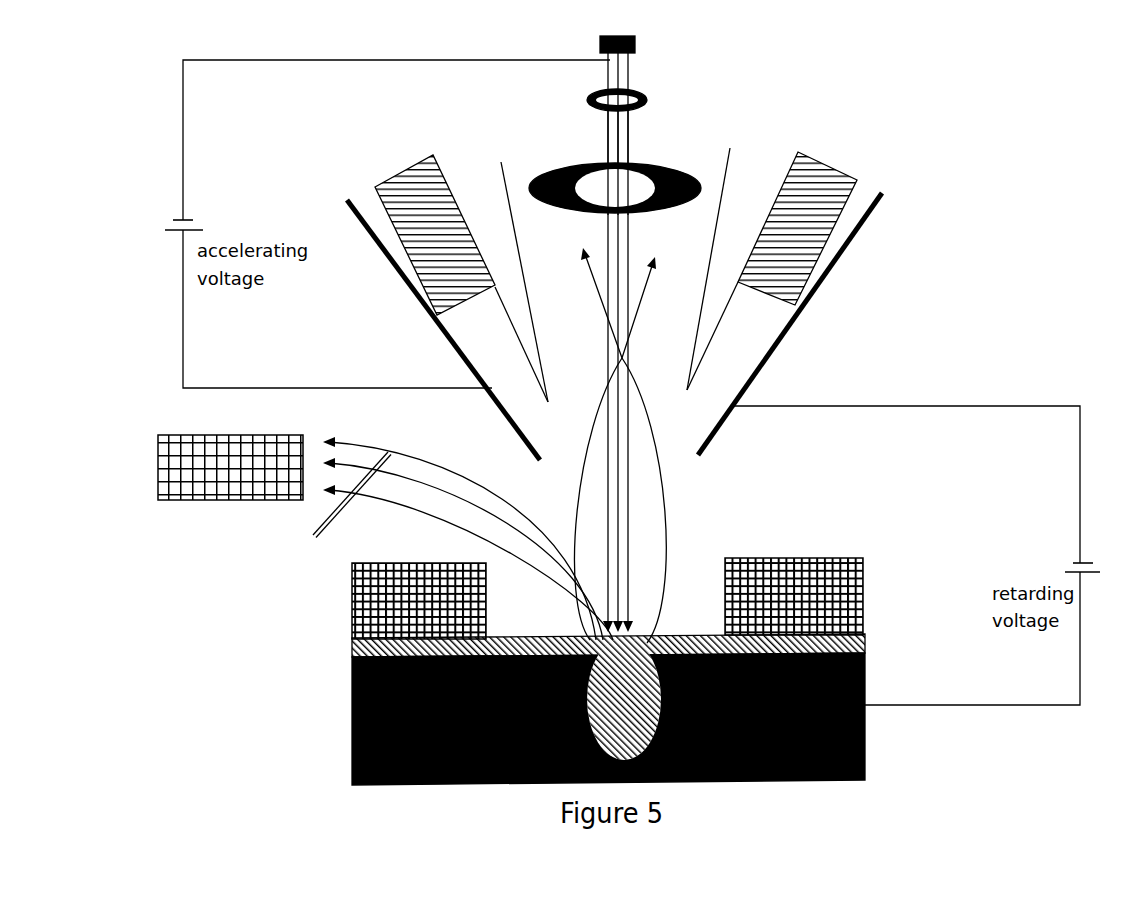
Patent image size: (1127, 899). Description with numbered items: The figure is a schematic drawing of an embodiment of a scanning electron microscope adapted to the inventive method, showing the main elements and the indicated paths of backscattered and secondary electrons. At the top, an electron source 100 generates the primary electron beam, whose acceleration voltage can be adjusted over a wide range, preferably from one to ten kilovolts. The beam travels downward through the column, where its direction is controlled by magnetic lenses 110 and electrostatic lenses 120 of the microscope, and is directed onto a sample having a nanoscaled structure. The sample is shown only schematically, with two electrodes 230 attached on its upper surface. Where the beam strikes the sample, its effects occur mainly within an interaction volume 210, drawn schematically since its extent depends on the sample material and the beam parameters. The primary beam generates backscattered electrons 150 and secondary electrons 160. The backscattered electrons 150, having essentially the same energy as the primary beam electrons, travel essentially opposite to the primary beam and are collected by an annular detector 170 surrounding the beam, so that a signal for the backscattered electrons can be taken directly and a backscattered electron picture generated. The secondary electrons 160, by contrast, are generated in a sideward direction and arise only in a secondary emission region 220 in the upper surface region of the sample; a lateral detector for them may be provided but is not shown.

The electron source 100 is at (585, 34).
The magnetic lenses 110 is at (746, 288).
The electrostatic lenses 120 is at (642, 136).
The backscattered electrons 150 is at (688, 532).
The secondary electrons 160 is at (385, 537).
The annular detector 170 is at (551, 161).
The interaction volume 210 is at (624, 699).
The secondary emission region 220 is at (350, 652).
The electrodes 230 is at (862, 600).